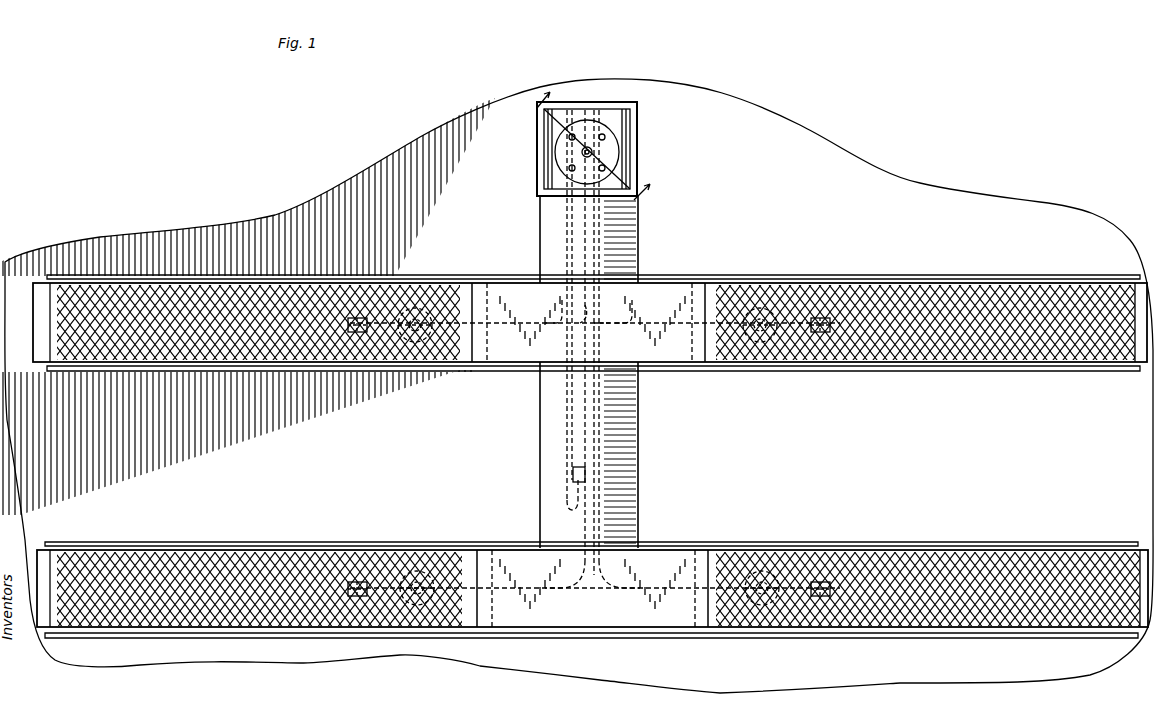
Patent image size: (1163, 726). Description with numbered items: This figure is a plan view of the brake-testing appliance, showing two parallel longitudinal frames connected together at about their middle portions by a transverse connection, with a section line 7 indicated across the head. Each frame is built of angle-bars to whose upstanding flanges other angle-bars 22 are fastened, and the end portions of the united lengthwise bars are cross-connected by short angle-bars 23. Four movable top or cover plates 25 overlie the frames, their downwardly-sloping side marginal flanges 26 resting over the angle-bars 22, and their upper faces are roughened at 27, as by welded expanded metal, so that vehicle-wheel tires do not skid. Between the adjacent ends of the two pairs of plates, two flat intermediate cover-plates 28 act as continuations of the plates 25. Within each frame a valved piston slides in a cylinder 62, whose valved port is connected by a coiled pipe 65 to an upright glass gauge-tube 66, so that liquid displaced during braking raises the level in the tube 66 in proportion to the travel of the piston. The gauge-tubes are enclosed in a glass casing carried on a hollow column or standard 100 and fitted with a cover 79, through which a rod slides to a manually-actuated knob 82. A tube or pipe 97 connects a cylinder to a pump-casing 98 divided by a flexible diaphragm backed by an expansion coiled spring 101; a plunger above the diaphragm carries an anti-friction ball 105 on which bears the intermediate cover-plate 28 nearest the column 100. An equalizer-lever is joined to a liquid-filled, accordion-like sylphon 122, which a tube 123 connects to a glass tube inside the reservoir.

The section line 7- 7 is at (587, 154).
The angle-bars 22 is at (490, 283).
The short angle-bars 23 is at (1138, 283).
The top or cover plates 25 is at (238, 283).
The side marginal flanges 26 is at (402, 263).
The roughened surface 27 is at (418, 285).
The intermediate cover-plates 28 is at (524, 283).
The cylinder 62 is at (356, 340).
The coiled pipe 65 is at (533, 306).
The gauge-tube 66 is at (568, 137).
The cover 79 is at (600, 135).
The knob 82 is at (582, 152).
The tube or pipe 97 is at (630, 152).
The pump-casing 98 is at (580, 335).
The hollow column or standard 100 is at (630, 137).
The expansion coiled spring 101 is at (600, 326).
The anti-friction ball 105 is at (598, 310).
The sylphon 122 is at (600, 465).
The tube 123 is at (566, 492).